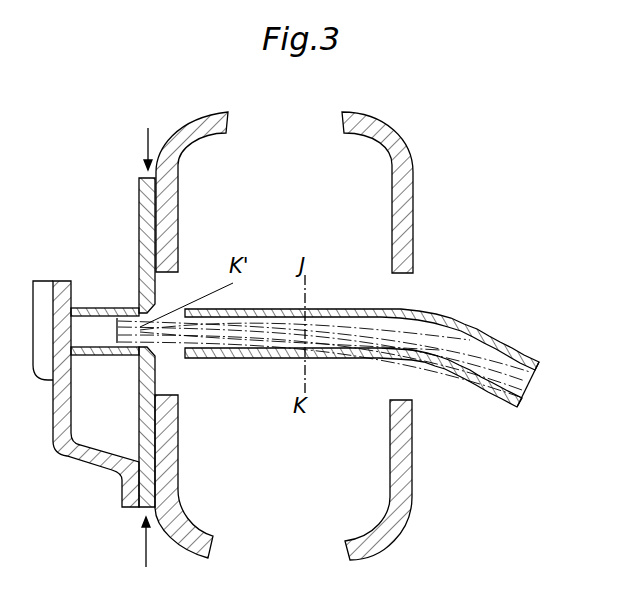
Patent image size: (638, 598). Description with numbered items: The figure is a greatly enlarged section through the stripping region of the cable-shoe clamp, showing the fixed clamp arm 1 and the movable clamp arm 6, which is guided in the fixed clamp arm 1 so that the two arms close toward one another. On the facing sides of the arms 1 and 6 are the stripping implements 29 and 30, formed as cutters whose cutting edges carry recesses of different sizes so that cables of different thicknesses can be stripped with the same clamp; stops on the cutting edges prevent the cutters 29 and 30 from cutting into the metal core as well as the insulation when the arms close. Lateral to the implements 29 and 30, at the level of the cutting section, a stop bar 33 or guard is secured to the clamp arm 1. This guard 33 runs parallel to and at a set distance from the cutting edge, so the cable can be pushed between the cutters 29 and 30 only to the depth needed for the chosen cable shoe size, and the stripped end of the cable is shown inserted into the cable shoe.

The fixed clamp arm 1 is at (155, 487).
The movable clamp arm 6 is at (168, 200).
The stripping implement 29 is at (146, 244).
The stripping implement 30 is at (148, 422).
The stop bar 33 is at (62, 392).